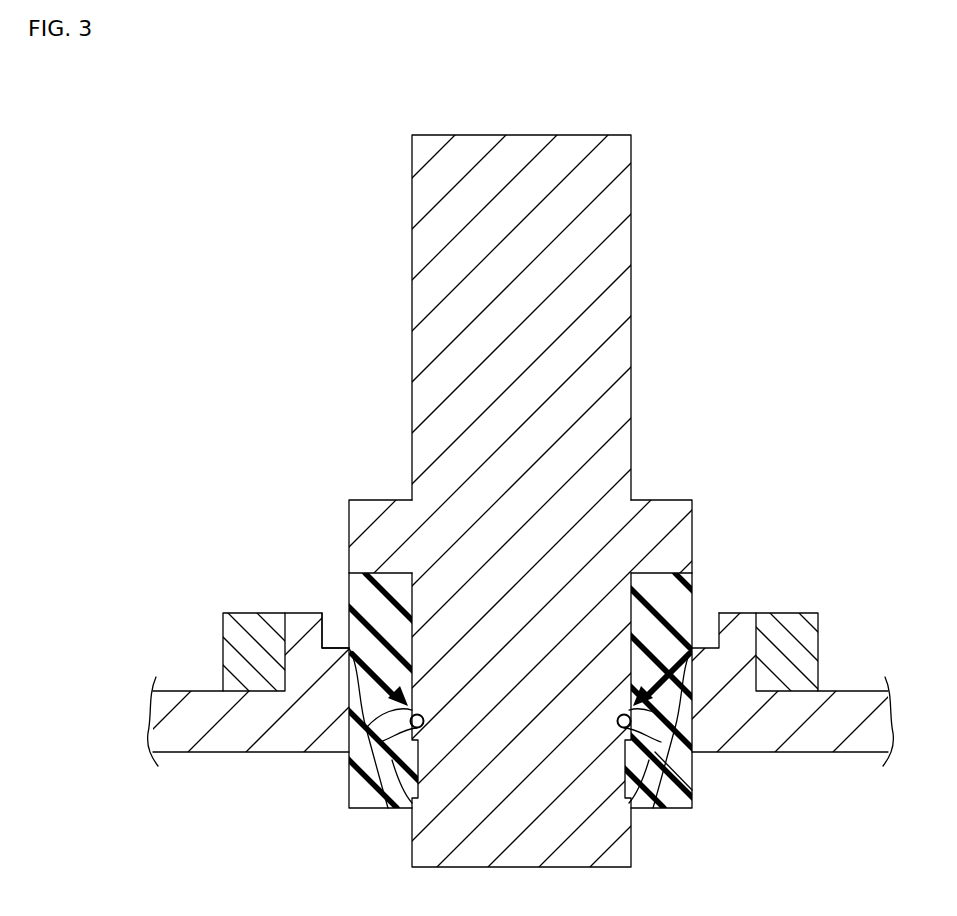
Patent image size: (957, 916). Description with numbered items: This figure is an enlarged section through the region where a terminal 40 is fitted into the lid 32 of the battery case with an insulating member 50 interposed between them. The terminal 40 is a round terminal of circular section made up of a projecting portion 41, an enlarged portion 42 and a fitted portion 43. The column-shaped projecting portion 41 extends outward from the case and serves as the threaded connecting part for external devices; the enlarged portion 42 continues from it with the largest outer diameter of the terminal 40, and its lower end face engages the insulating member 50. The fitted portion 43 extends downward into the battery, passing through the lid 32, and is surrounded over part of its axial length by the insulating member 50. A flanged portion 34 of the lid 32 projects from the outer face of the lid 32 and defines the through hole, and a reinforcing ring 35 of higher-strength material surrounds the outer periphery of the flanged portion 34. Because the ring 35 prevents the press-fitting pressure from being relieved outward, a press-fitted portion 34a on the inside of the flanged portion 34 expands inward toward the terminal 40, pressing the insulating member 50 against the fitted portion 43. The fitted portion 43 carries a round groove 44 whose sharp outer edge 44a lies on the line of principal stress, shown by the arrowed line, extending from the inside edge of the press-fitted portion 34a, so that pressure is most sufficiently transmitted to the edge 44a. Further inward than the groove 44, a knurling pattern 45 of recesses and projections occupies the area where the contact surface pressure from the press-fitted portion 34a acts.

The lid 32 is at (189, 691).
The flanged portion 34 is at (305, 613).
The press-fitted portion 34a is at (326, 561).
The reinforcing ring 35 is at (807, 642).
The terminal 40 is at (478, 518).
The projecting portion 41 is at (632, 300).
The enlarged portion 42 is at (693, 537).
The fitted portion 43 is at (623, 857).
The groove 44 is at (536, 741).
The edge 44a is at (357, 793).
The knurling pattern 45 is at (410, 712).
The insulating member 50 is at (678, 769).